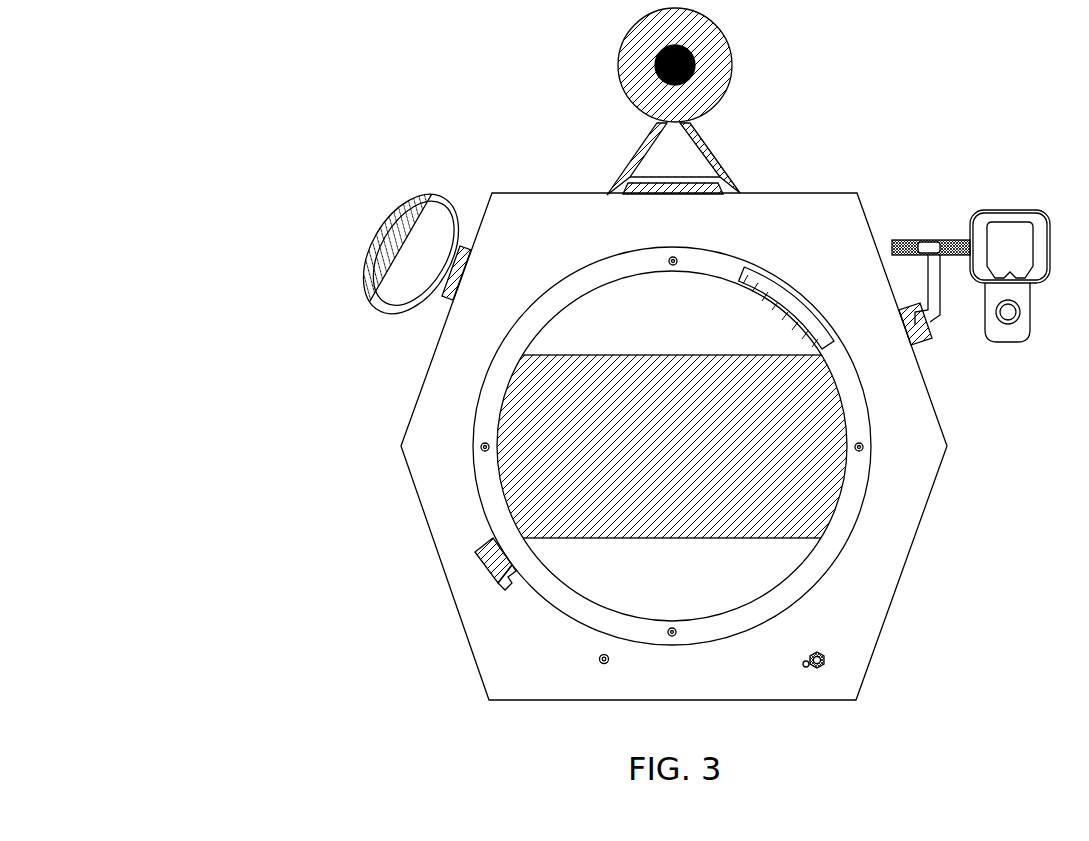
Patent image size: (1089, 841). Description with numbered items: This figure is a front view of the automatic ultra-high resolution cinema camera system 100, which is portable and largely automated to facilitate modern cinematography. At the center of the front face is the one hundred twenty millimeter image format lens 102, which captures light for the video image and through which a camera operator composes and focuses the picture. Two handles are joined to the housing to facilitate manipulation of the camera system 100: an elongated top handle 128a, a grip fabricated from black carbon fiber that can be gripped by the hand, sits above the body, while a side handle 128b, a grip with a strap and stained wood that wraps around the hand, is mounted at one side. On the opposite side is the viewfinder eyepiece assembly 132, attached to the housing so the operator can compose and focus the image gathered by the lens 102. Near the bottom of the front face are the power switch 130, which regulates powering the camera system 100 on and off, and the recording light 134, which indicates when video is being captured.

The ultra-high resolution cinema camera system 100 is at (240, 101).
The 120 mm lens 102 is at (693, 328).
The top handle 128a is at (618, 60).
The side handle 128b is at (390, 218).
The power switch 130 is at (832, 660).
The viewfinder eyepiece assembly 132 is at (1003, 208).
The recording light 134 is at (600, 660).